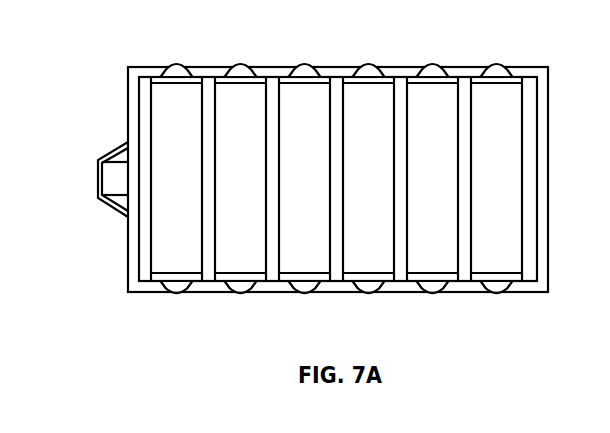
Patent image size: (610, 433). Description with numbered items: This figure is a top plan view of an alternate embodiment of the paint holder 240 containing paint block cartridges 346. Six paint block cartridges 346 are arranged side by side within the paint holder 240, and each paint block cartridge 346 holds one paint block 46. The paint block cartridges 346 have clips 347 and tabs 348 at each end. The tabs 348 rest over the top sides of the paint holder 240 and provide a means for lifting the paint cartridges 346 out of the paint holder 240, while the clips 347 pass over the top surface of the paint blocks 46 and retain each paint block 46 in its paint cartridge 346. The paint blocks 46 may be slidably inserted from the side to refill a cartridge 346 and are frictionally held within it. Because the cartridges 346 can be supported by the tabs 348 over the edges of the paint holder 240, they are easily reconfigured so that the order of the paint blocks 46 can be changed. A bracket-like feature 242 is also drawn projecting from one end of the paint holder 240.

The paint holder 240 is at (136, 67).
The connector 242 is at (100, 158).
The paint block 46 is at (190, 187).
The paint block cartridge 346 is at (367, 54).
The clips 347 is at (519, 289).
The tabs 348 is at (430, 293).